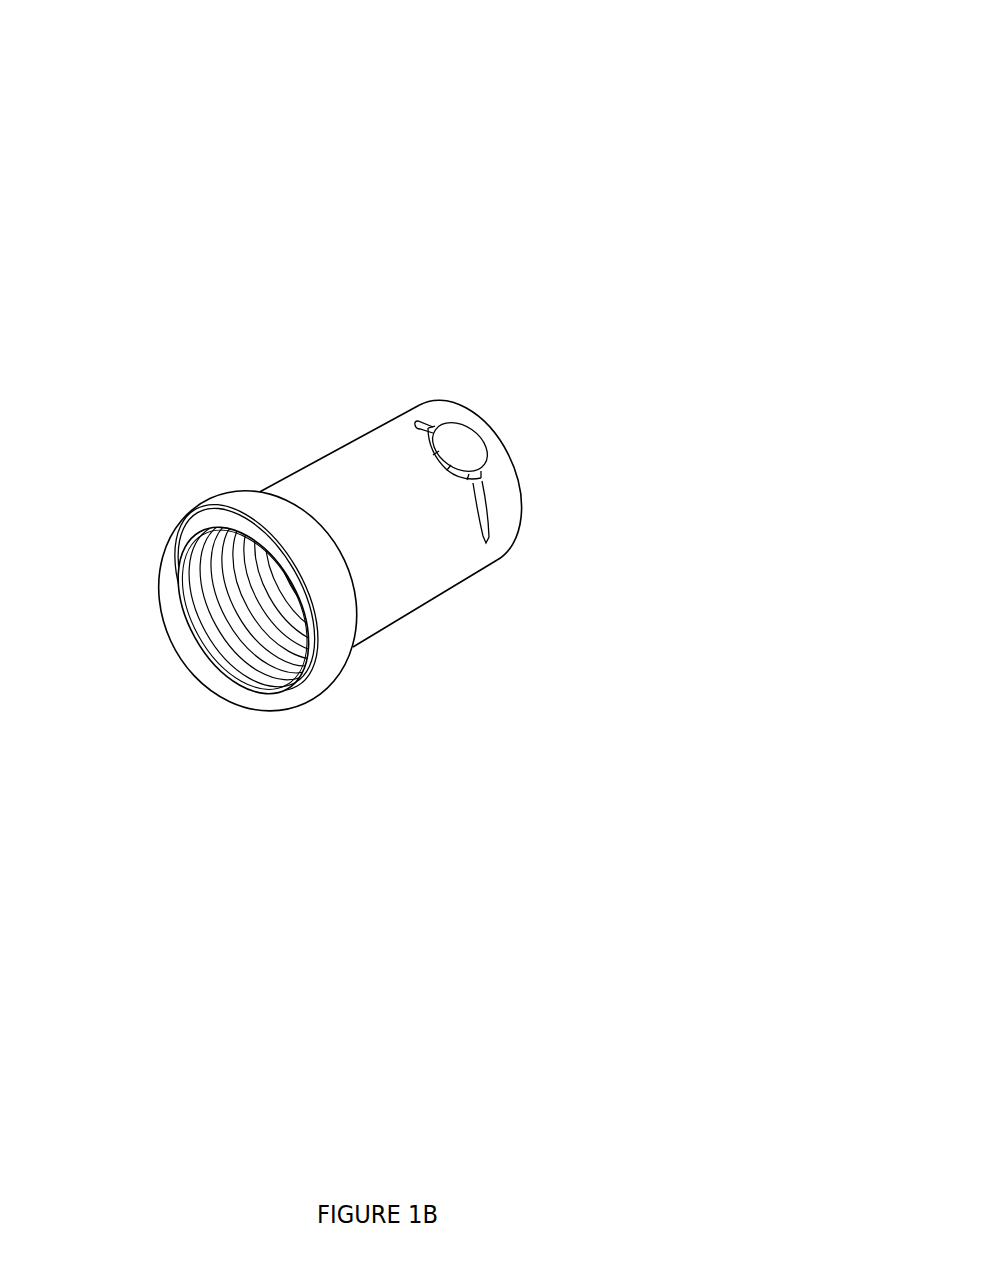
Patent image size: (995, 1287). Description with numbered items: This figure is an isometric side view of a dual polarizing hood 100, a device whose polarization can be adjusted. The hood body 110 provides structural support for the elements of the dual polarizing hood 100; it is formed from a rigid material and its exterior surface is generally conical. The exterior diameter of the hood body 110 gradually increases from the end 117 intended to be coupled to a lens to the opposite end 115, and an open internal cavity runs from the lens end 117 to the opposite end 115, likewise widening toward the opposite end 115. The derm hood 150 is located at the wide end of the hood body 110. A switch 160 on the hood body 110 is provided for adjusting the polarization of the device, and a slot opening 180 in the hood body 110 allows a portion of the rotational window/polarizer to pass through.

The dual polarizing hood 100 is at (397, 385).
The hood body 110 is at (411, 577).
The opposite end 115 is at (167, 540).
The end intended to be coupled to a lens 117 is at (441, 402).
The derm hood 150 is at (332, 637).
The switch 160 is at (463, 446).
The slot opening 180 is at (488, 532).